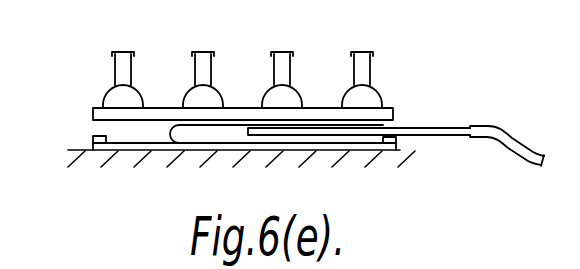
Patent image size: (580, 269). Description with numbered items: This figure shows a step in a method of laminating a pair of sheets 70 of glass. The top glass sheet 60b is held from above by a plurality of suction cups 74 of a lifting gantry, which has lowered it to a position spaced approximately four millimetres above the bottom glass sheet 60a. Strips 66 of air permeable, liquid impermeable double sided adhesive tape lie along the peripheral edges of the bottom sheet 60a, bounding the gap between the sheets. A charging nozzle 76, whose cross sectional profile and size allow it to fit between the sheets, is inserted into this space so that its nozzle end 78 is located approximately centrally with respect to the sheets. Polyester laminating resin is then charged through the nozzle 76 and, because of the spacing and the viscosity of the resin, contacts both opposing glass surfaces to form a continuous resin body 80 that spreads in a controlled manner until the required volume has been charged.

The bottom glass sheet 60a is at (357, 148).
The top glass sheet 60b is at (390, 108).
The strips of double sided adhesive tape 66 is at (398, 148).
The pair of sheets 70 is at (89, 124).
The suction cups 74 is at (358, 100).
The charging nozzle 76 is at (455, 126).
The nozzle end 78 is at (243, 129).
The resin body 80 is at (191, 129).